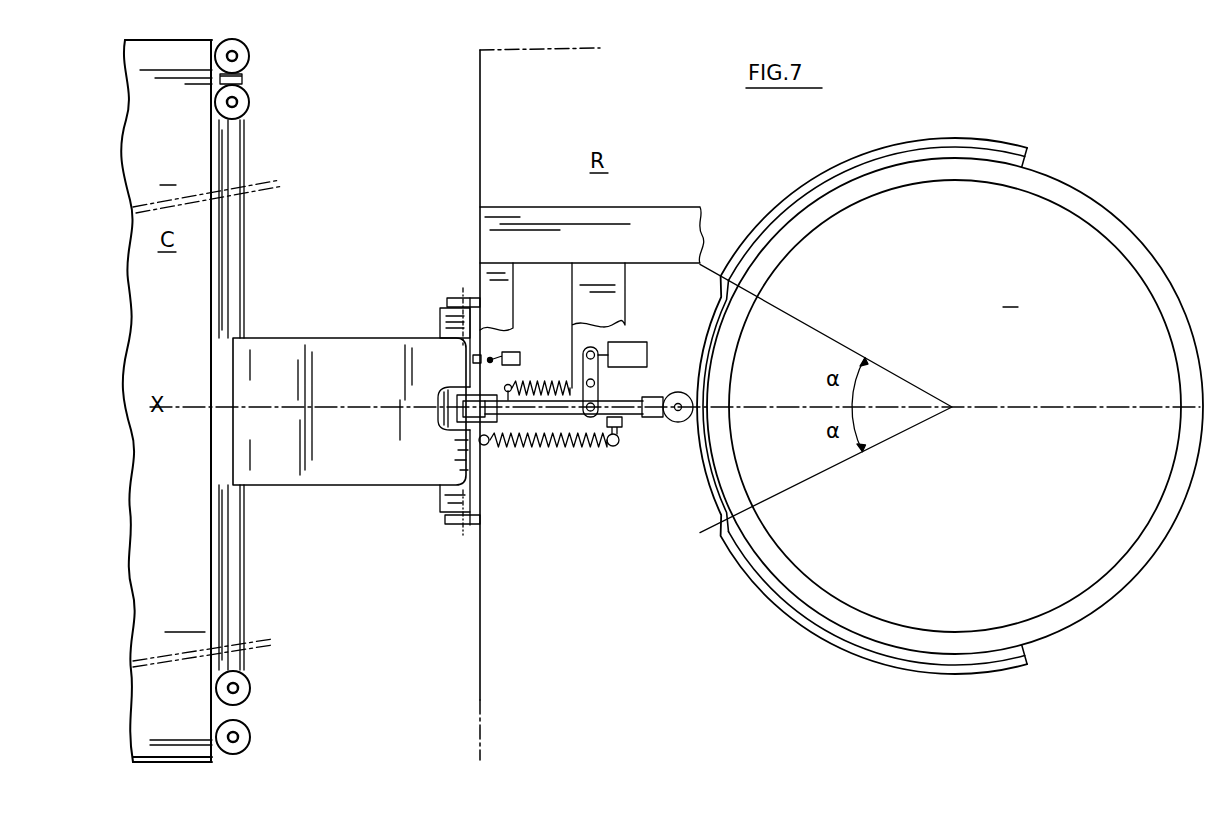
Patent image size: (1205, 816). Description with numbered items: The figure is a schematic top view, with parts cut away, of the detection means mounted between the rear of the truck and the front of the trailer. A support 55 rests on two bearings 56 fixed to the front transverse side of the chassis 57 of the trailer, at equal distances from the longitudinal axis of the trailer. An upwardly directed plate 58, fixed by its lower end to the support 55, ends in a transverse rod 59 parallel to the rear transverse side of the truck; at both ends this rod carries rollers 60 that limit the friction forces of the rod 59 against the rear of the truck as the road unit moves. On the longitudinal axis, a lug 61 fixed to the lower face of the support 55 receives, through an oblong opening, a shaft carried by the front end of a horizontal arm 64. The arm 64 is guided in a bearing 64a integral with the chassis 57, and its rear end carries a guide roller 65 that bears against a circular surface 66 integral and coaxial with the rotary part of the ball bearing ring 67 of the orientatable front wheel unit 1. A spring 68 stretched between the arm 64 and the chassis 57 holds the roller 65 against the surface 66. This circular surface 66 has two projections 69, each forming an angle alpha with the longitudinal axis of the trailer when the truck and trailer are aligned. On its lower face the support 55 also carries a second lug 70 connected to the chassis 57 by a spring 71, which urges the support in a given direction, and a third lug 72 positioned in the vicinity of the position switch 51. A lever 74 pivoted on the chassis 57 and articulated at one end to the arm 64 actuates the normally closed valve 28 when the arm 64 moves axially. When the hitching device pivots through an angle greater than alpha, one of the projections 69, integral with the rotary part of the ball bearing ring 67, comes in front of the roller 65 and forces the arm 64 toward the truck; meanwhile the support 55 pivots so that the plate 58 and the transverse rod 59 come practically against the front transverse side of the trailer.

The front wheel unit 1 is at (955, 406).
The normally closed valve 28 is at (640, 342).
The position switch 51 is at (518, 350).
The support 55 is at (440, 322).
The bearings 56 is at (462, 295).
The chassis 57 is at (482, 250).
The plate 58 is at (296, 352).
The transverse rod 59 is at (238, 246).
The rollers 60 is at (249, 98).
The lug 61 is at (440, 420).
The horizontal arm 64 is at (568, 420).
The bearing 64a is at (620, 430).
The guide roller 65 is at (680, 392).
The circular surface 66 is at (706, 348).
The ball bearing ring 67 is at (896, 184).
The spring 68 is at (556, 380).
The projections 69 is at (758, 222).
The second lug 70 is at (456, 450).
The spring 71 is at (530, 446).
The third lug 72 is at (472, 360).
The lever 74 is at (600, 384).